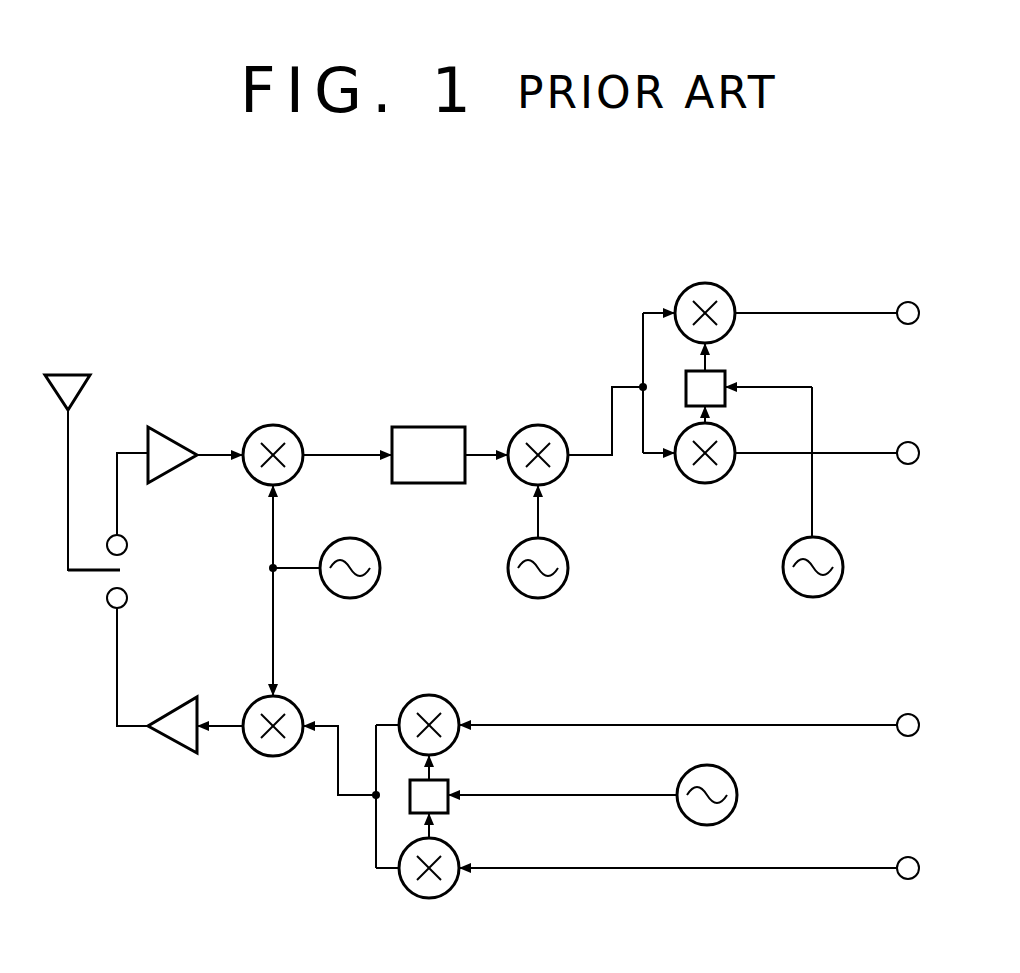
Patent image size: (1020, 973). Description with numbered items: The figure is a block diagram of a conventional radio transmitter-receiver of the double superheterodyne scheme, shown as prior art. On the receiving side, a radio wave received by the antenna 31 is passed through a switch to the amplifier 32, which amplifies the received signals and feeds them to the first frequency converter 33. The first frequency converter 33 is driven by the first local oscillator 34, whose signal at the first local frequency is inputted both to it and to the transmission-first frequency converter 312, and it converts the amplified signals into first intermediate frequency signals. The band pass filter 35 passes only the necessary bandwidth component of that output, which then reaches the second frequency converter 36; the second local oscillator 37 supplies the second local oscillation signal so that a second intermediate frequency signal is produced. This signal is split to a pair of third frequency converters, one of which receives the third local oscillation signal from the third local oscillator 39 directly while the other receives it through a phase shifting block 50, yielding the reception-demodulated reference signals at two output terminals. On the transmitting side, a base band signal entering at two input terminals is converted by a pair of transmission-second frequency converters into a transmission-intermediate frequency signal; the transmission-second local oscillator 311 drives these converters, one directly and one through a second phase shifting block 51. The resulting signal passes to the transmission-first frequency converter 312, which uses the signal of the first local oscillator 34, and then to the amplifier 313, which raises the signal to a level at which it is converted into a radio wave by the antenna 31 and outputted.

The antenna 31 is at (78, 372).
The amplifier 32 is at (165, 427).
The first frequency converter 33 is at (270, 424).
The first local oscillator 34 is at (381, 569).
The band pass filter 35 is at (430, 426).
The second frequency converter 36 is at (538, 425).
The second local oscillator 37 is at (569, 569).
The third local oscillator 39 is at (820, 599).
The phase shifter 50 is at (727, 372).
The phase shifter 51 is at (452, 786).
The transmission-second local oscillator 311 is at (674, 824).
The transmission-first frequency converter 312 is at (279, 757).
The amplifier 313 is at (178, 753).